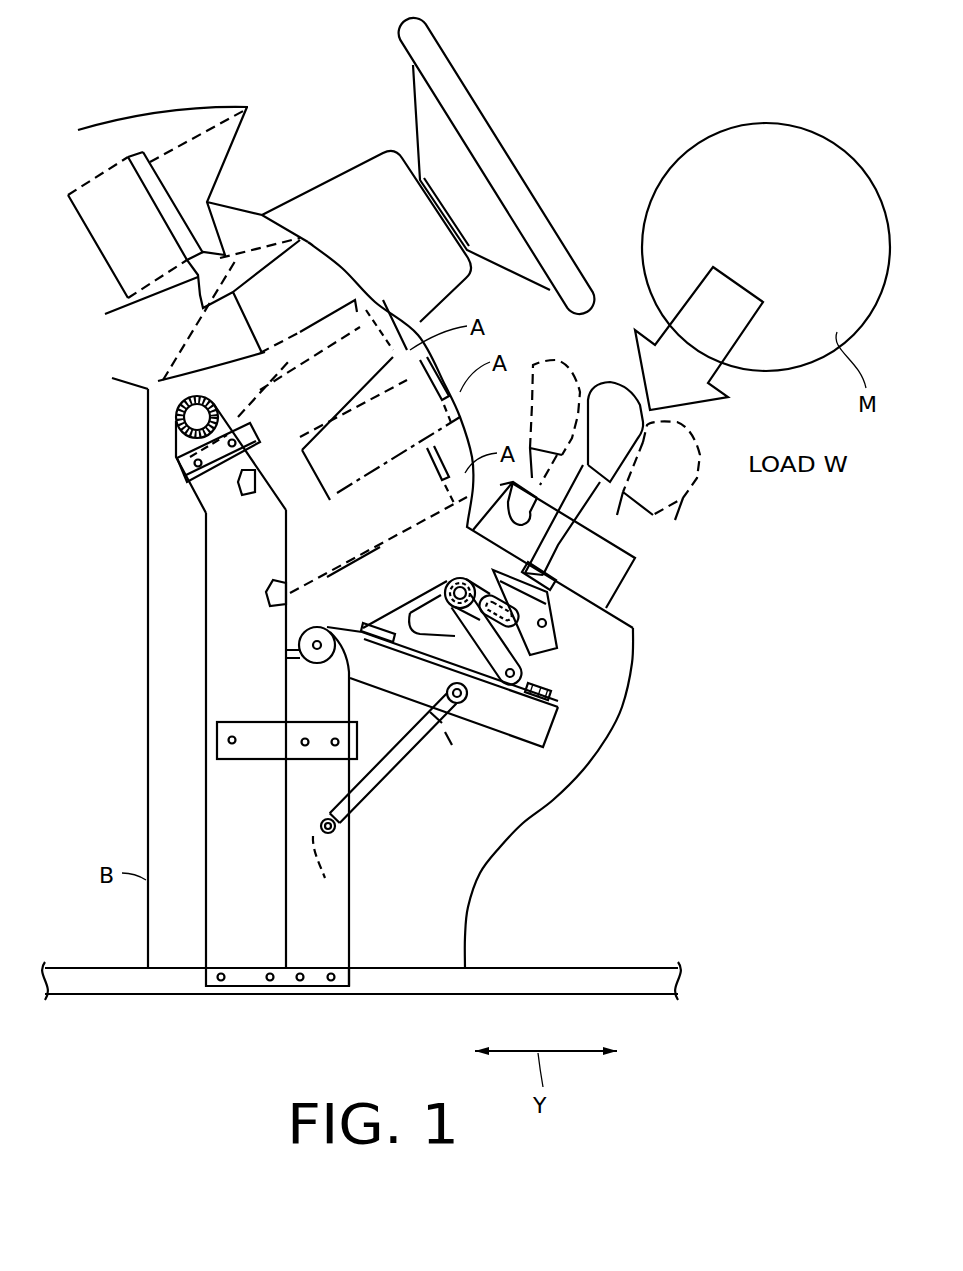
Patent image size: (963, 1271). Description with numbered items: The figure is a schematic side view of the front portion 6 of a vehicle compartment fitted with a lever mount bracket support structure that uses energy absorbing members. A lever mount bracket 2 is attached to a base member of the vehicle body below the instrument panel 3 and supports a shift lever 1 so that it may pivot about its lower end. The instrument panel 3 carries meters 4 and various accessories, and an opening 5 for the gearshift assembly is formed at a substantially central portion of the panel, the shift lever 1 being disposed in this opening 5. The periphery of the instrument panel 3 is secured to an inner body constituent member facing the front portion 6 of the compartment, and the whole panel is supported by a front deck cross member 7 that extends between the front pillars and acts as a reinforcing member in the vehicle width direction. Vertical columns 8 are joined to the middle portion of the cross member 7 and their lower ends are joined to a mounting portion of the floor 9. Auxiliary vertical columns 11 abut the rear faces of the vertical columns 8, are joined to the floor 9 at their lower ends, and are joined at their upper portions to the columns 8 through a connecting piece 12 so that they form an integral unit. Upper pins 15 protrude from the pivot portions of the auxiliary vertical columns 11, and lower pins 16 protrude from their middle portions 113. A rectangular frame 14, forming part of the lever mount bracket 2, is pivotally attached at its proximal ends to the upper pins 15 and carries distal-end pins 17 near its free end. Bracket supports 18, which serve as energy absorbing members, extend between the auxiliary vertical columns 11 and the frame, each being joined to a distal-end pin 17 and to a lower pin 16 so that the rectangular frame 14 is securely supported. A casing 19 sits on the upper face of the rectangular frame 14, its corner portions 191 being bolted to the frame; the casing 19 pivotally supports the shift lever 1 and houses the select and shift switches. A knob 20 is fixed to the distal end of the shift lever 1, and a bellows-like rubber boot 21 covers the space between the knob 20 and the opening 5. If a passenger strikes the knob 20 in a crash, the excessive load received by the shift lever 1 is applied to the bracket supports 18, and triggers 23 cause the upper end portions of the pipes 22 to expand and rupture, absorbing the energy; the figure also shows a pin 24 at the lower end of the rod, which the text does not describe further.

The shift lever 1 is at (605, 518).
The lever mount bracket 2 is at (544, 752).
The instrument panel 3 is at (641, 661).
The meters 4 is at (148, 158).
The opening 5 is at (563, 578).
The front portion of the vehicle compartment 6 is at (607, 93).
The front deck cross member 7 is at (176, 428).
The vertical columns 8 is at (220, 807).
The floor 9 is at (617, 975).
The auxiliary vertical columns 11 is at (358, 920).
The connecting piece 12 is at (408, 748).
The rectangular frame 14 is at (543, 723).
The upper pins 15 is at (312, 643).
The lower pins 16 is at (324, 876).
The distal-end pins 17 is at (470, 694).
The bracket supports 18 is at (448, 735).
The casing 19 is at (558, 660).
The knob 20 is at (612, 392).
The boot 21 is at (596, 528).
The pipes 22 is at (440, 733).
The triggers 23 is at (440, 718).
The pivot pin 24 is at (353, 808).
The middle portions 113 is at (340, 863).
The corner portions 191 is at (380, 648).